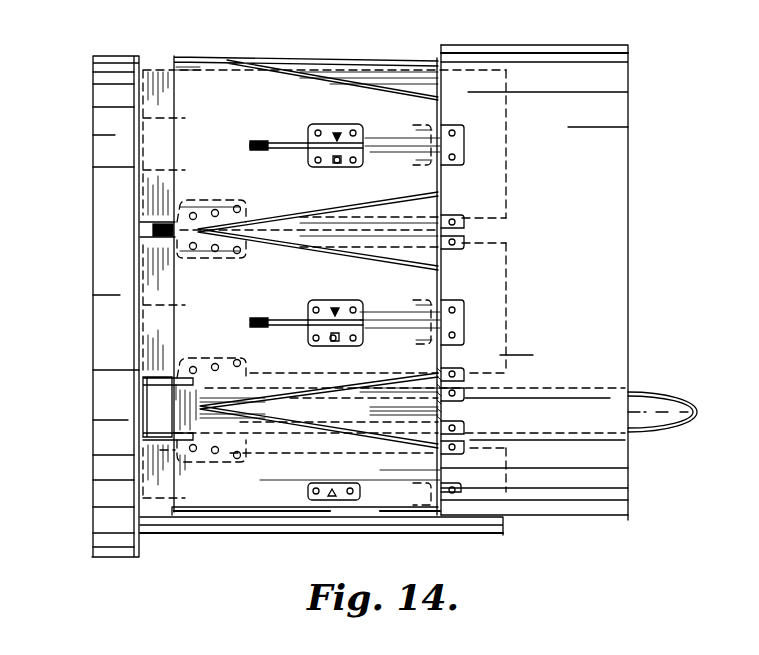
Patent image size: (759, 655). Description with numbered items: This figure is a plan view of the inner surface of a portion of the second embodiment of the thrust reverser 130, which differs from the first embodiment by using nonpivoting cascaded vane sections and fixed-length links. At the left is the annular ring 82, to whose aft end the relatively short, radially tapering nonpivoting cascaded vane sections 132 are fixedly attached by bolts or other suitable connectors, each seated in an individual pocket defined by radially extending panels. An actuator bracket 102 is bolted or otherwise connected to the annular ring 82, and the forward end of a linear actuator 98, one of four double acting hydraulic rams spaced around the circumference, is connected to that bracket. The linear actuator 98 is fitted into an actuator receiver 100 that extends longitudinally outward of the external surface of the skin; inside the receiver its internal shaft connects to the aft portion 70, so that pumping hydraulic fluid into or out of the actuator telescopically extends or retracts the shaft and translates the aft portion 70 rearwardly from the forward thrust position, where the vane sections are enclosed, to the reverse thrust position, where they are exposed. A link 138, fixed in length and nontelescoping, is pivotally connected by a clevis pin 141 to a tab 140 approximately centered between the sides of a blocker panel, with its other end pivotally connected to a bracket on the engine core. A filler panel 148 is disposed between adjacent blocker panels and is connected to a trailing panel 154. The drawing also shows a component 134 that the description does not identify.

The aft portion 70 is at (362, 60).
The annular ring 82 is at (100, 109).
The linear actuator 98 is at (558, 407).
The actuator receiver 100 is at (652, 402).
The actuator bracket 102 is at (147, 402).
The thrust reverser 130 is at (413, 46).
The nonpivoting cascaded vane section 132 is at (155, 63).
The hinge bracket 134 is at (158, 220).
The link 138 is at (285, 143).
The tab 140 is at (337, 167).
The clevis pin 141 is at (337, 133).
The filler panel 148 is at (342, 412).
The trailing panel 154 is at (598, 176).